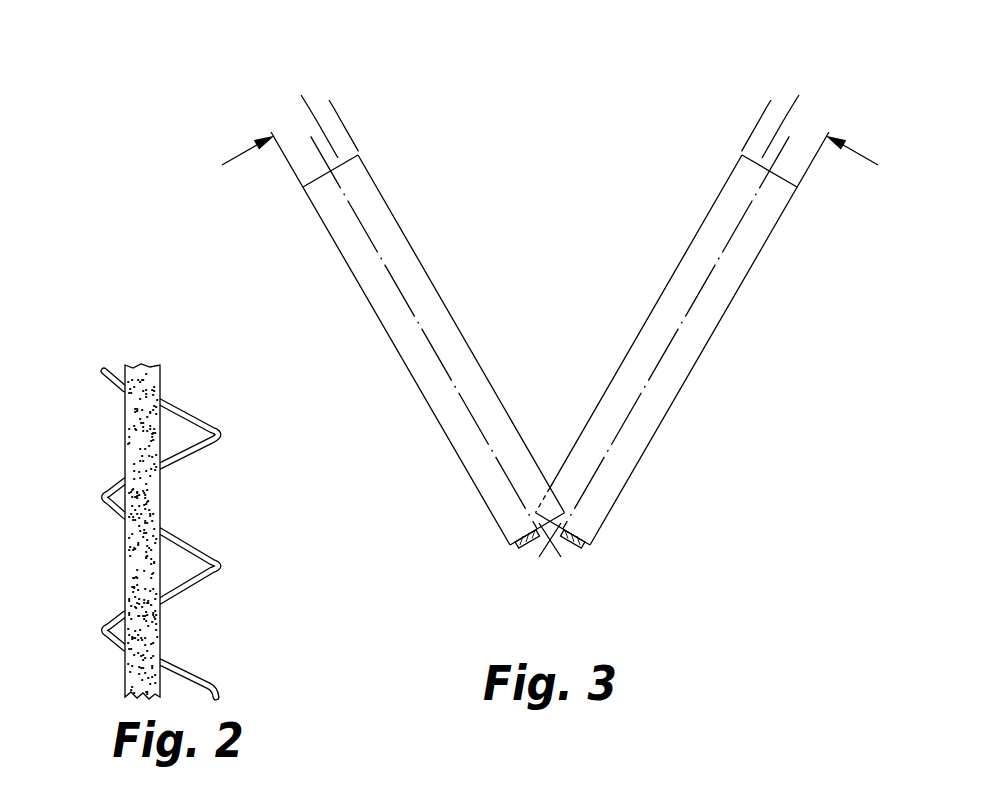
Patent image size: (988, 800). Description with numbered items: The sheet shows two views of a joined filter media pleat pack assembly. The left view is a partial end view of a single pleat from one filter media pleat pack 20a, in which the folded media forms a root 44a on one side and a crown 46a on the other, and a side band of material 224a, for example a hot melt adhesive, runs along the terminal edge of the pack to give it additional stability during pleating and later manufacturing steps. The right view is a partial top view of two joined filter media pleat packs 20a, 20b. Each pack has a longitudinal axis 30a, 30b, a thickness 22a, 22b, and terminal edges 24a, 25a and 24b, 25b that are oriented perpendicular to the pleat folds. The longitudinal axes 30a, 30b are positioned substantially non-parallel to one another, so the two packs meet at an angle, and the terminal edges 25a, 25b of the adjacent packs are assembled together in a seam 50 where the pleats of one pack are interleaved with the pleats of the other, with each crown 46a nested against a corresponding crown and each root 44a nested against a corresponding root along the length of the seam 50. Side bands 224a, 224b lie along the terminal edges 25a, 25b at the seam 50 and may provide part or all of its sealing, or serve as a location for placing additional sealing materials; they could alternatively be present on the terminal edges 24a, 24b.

In FIG. 3, the filter media pleat pack 20a is at (403, 340).
In FIG. 3, the filter media pleat pack 20b is at (695, 338).
In FIG. 3, the thickness 22a is at (334, 101).
In FIG. 3, the thickness 22b is at (766, 101).
In FIG. 3, the terminal edge 24a is at (310, 108).
In FIG. 3, the terminal edge 24b is at (790, 108).
In FIG. 3, the terminal edge 25a is at (528, 548).
In FIG. 3, the terminal edge 25b is at (570, 548).
In FIG. 3, the longitudinal axis 30a is at (363, 222).
In FIG. 3, the longitudinal axis 30b is at (738, 220).
In FIG. 3, the seam 50 is at (549, 613).
In FIG. 2, the side band of material 224a is at (142, 378).
In FIG. 3, the side band of material 224a is at (521, 546).
In FIG. 3, the side band of material 224b is at (580, 547).
In FIG. 2, the root 44a is at (105, 496).
In FIG. 2, the crown 46a is at (221, 565).